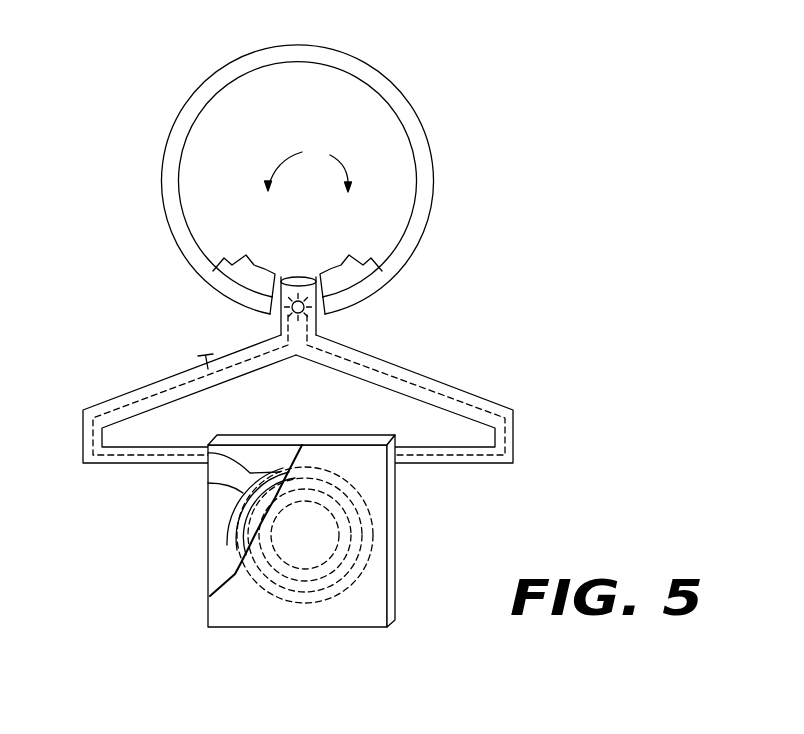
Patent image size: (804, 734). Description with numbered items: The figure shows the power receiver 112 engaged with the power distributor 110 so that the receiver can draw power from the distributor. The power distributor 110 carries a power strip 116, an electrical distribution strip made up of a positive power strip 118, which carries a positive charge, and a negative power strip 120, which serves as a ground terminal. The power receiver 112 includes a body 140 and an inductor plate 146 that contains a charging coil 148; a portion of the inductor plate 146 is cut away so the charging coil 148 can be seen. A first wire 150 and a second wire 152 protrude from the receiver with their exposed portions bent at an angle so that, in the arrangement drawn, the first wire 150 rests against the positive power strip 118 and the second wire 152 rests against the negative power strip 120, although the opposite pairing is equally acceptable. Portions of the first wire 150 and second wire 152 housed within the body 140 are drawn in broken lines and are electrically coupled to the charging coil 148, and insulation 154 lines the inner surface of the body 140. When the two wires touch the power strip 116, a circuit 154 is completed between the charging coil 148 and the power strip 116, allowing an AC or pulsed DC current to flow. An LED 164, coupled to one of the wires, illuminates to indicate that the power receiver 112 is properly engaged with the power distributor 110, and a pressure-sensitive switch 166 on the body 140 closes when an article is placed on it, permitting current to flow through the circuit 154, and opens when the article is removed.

The power distributor 110 is at (340, 44).
The power receiver 112 is at (492, 386).
The power strip 116 is at (308, 159).
The positive power strip 118 is at (248, 262).
The negative power strip 120 is at (347, 262).
The body 140 is at (131, 392).
The inductor plate 146 is at (397, 538).
The charging coil 148 is at (242, 493).
The first wire 150 is at (285, 273).
The second wire 152 is at (307, 276).
The circuit 154 is at (174, 382).
The LED 164 is at (298, 314).
The switch 166 is at (205, 352).